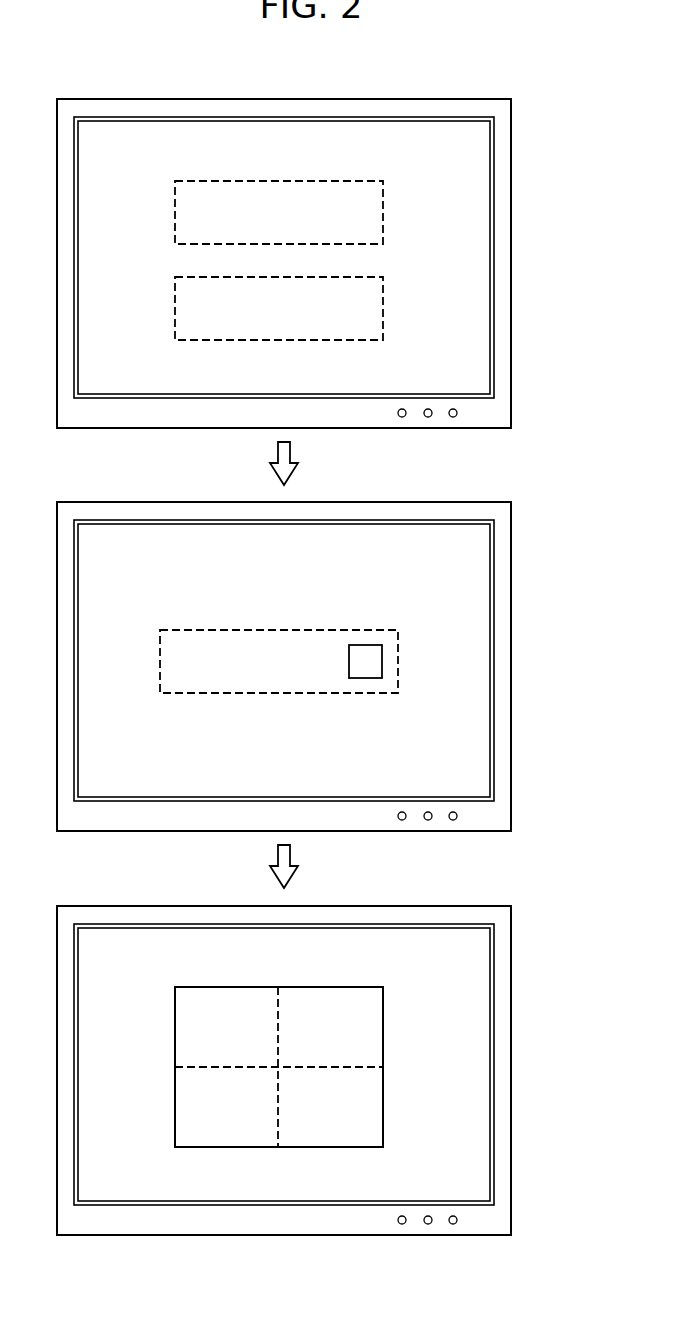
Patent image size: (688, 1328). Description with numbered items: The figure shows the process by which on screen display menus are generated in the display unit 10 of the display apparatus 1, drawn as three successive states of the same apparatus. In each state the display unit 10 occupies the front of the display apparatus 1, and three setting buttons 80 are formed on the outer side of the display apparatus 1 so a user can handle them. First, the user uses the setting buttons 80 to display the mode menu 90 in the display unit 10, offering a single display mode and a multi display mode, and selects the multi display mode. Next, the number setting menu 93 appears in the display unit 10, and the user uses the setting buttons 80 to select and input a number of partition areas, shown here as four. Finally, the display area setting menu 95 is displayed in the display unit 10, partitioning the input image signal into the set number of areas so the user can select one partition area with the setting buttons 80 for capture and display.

The display apparatus 1 is at (528, 77).
The display unit 10 is at (470, 152).
The setting button 80 is at (402, 417).
The mode menu 90 is at (383, 218).
The number setting menu 93 is at (398, 657).
The display area setting menu 95 is at (373, 1023).